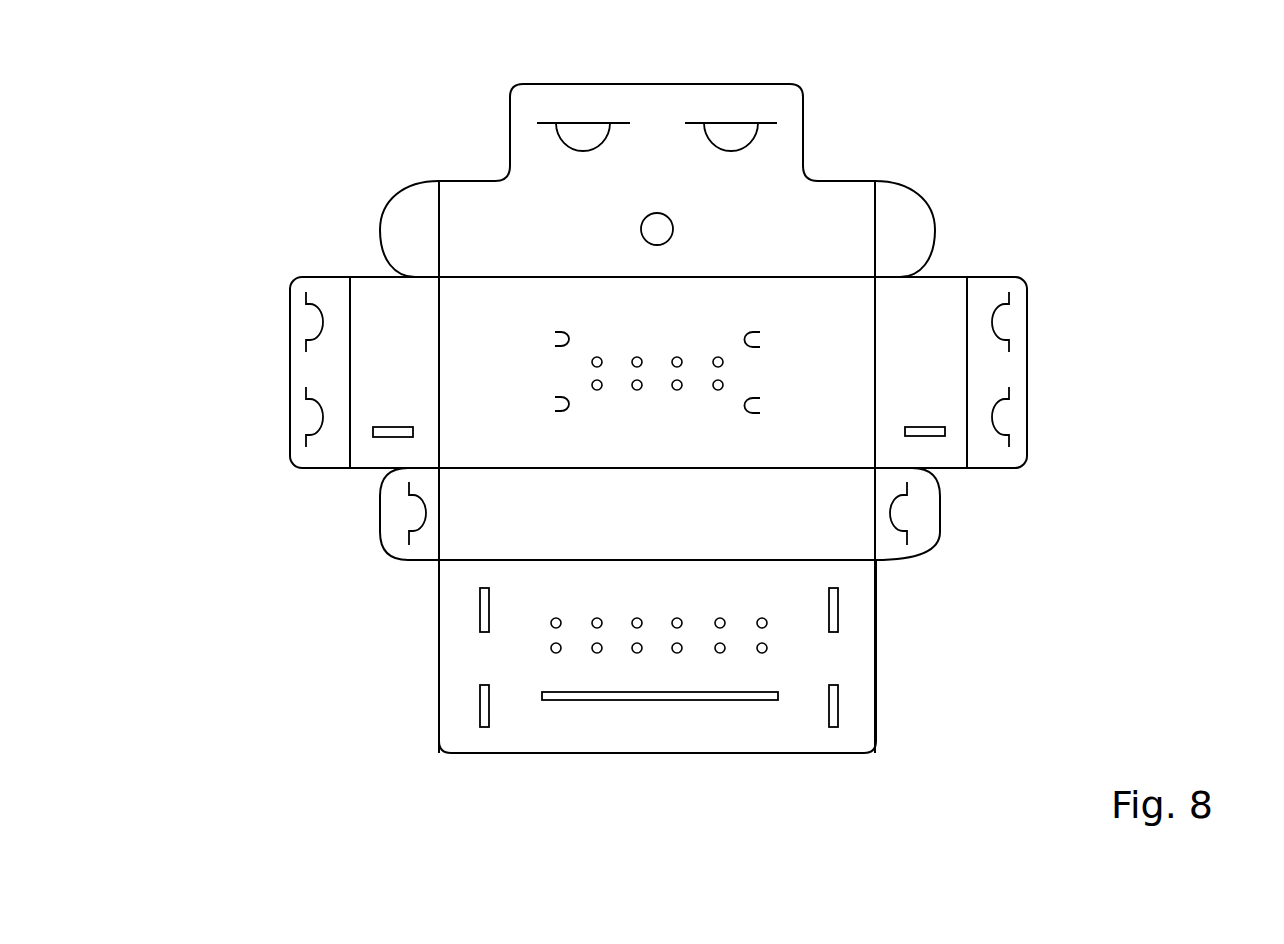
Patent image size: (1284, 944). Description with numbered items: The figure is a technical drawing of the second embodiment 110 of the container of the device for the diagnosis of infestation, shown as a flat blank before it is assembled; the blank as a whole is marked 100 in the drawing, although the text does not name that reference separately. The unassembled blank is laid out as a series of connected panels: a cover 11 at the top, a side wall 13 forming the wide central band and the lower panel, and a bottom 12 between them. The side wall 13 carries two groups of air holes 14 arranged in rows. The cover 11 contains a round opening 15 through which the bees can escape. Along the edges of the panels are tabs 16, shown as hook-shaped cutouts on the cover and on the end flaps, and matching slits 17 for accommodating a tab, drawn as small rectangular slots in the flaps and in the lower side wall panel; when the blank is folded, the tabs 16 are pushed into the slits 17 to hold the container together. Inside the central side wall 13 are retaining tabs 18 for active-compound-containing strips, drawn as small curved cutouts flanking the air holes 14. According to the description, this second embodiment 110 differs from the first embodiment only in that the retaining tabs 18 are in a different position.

The second embodiment of the container 110 is at (323, 148).
The packaging / sheet material 100 is at (363, 777).
The cover 11 is at (812, 240).
The bottom 12 is at (815, 530).
The side wall 13 is at (815, 391).
The air holes 14 is at (616, 372).
The opening through which the bees can escape 15 is at (652, 226).
The tab 16 is at (732, 138).
The slit for accommodating a tab 17 is at (923, 432).
The retaining tabs for active-compound-containing strips 18 is at (553, 338).